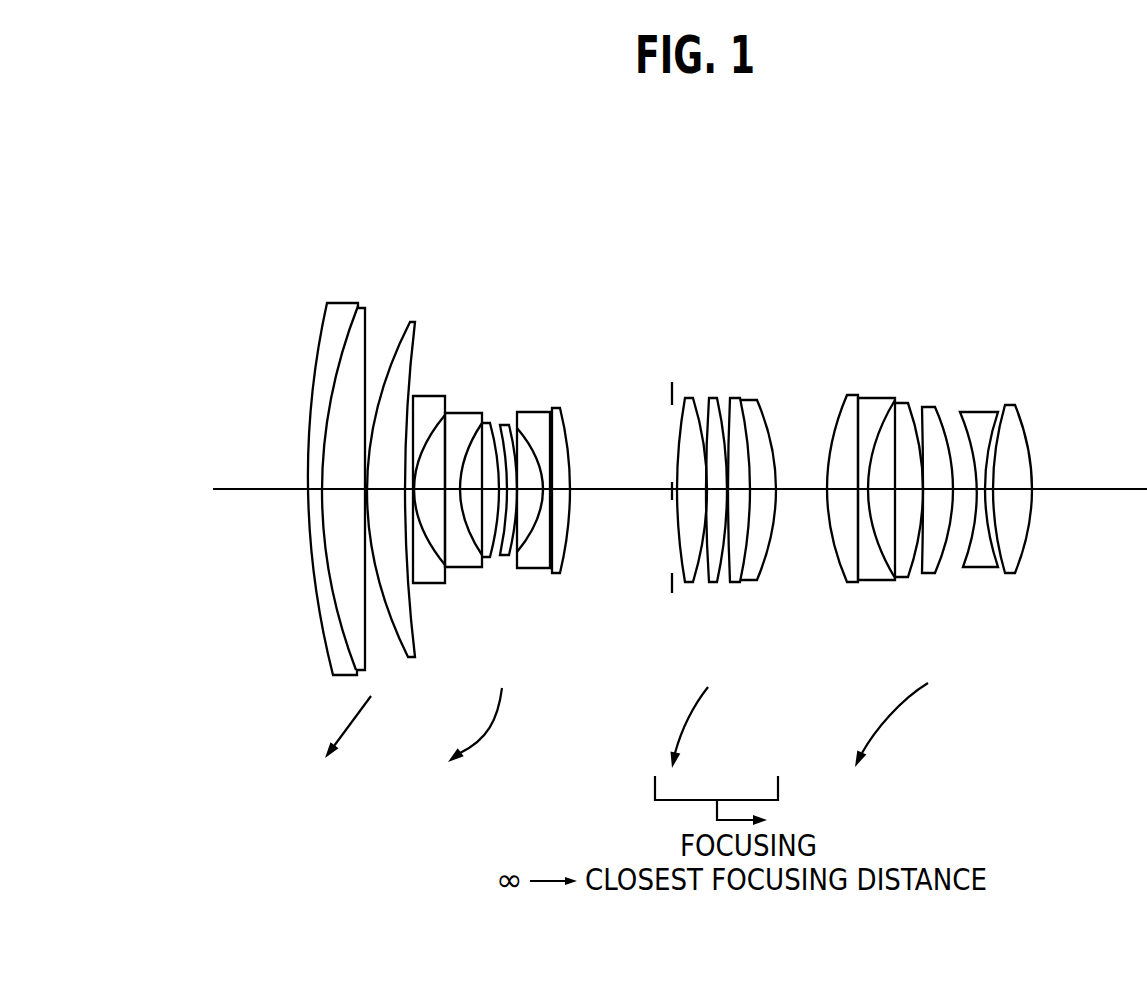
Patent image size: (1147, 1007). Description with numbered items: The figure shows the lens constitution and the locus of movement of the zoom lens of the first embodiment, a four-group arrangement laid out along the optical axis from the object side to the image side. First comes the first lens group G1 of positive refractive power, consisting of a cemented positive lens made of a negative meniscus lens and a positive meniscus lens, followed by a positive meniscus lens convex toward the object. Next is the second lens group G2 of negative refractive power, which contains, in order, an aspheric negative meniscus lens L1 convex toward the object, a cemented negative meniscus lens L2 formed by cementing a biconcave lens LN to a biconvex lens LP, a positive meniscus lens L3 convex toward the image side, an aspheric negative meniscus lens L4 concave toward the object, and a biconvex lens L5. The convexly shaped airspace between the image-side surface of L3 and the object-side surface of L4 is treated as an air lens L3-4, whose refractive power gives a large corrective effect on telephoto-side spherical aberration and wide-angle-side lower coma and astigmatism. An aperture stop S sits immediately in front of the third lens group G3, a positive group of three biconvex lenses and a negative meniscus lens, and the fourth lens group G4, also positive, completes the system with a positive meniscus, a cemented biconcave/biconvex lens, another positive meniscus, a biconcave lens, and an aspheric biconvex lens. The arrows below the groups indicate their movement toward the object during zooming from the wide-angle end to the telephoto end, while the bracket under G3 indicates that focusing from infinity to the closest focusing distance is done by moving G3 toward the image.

The first lens group G1 is at (430, 222).
The second lens group G2 is at (532, 411).
The third lens group G3 is at (717, 378).
The fourth lens group G4 is at (1012, 222).
The aspheric negative meniscus lens L1 is at (428, 396).
The cemented negative meniscus lens L2 is at (478, 416).
The biconcave lens LN is at (458, 413).
The biconvex lens LP is at (486, 423).
The positive meniscus lens L3 is at (505, 425).
The aspheric negative meniscus lens L4 is at (532, 412).
The biconvex lens L5 is at (556, 408).
The air lens L3-4 is at (513, 562).
The aperture stop S is at (673, 423).